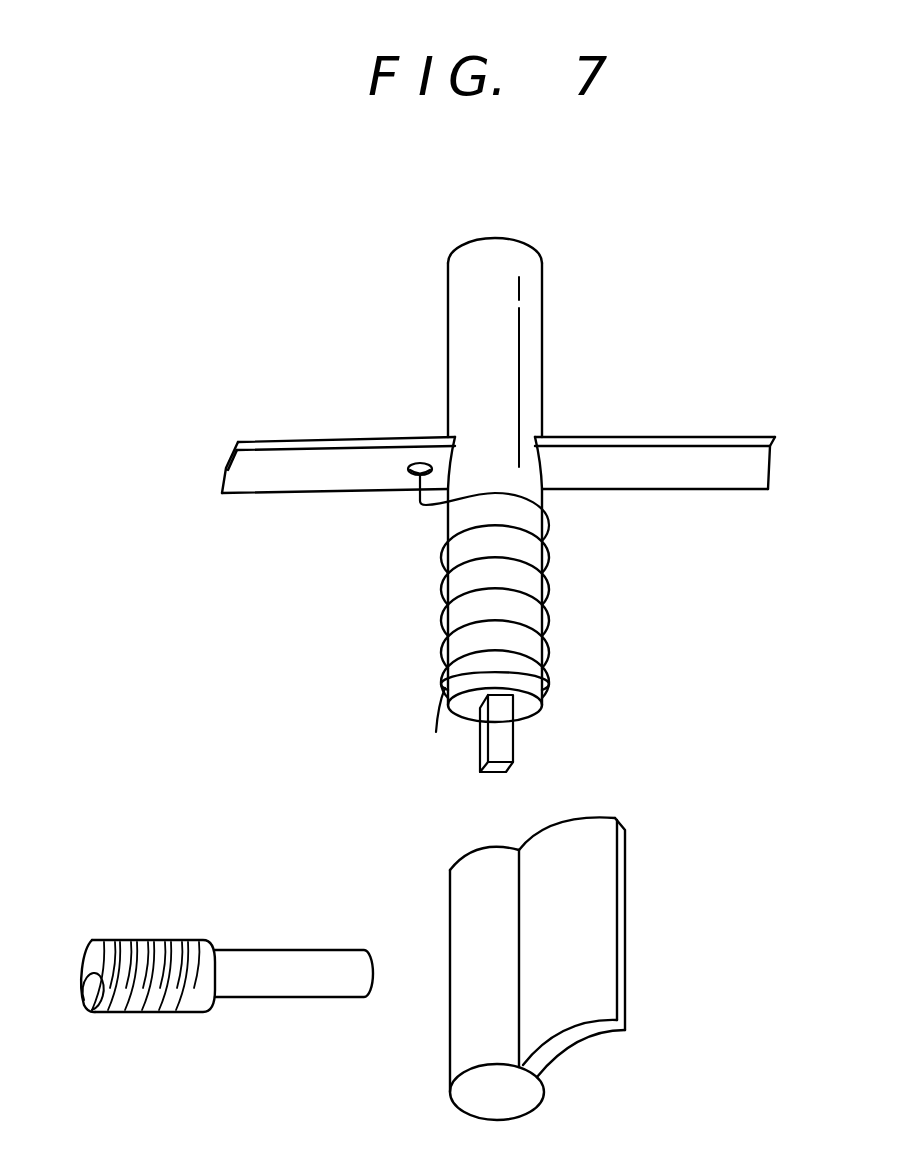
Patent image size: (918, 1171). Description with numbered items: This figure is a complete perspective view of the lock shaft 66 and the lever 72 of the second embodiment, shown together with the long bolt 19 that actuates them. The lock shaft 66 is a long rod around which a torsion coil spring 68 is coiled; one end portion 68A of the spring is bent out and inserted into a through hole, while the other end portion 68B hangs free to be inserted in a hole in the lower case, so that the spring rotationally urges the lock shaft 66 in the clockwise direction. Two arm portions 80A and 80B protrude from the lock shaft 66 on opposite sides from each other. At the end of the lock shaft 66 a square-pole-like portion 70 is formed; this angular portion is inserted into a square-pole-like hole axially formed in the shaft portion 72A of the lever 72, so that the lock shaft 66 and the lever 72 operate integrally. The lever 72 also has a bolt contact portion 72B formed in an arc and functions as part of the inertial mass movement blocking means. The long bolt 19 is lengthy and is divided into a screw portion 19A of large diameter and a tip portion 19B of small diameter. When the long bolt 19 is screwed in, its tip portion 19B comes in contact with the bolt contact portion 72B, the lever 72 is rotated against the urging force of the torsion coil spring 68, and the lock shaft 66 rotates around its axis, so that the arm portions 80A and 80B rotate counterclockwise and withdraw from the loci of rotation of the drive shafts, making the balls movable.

The lock shaft 66 is at (553, 355).
The torsion coil spring 68 is at (552, 565).
The end portion of torsion coil spring 68A is at (432, 503).
The other end portion of torsion coil spring 68B is at (440, 702).
The square-pole-like portion 70 is at (507, 740).
The arm portion 80A is at (305, 440).
The arm portion 80B is at (693, 437).
The long bolt 19 is at (227, 967).
The screw portion 19A is at (133, 1006).
The tip portion 19B is at (292, 1000).
The lever 72 is at (550, 973).
The shaft portion 72A is at (460, 1000).
The bolt contact portion 72B is at (593, 1033).